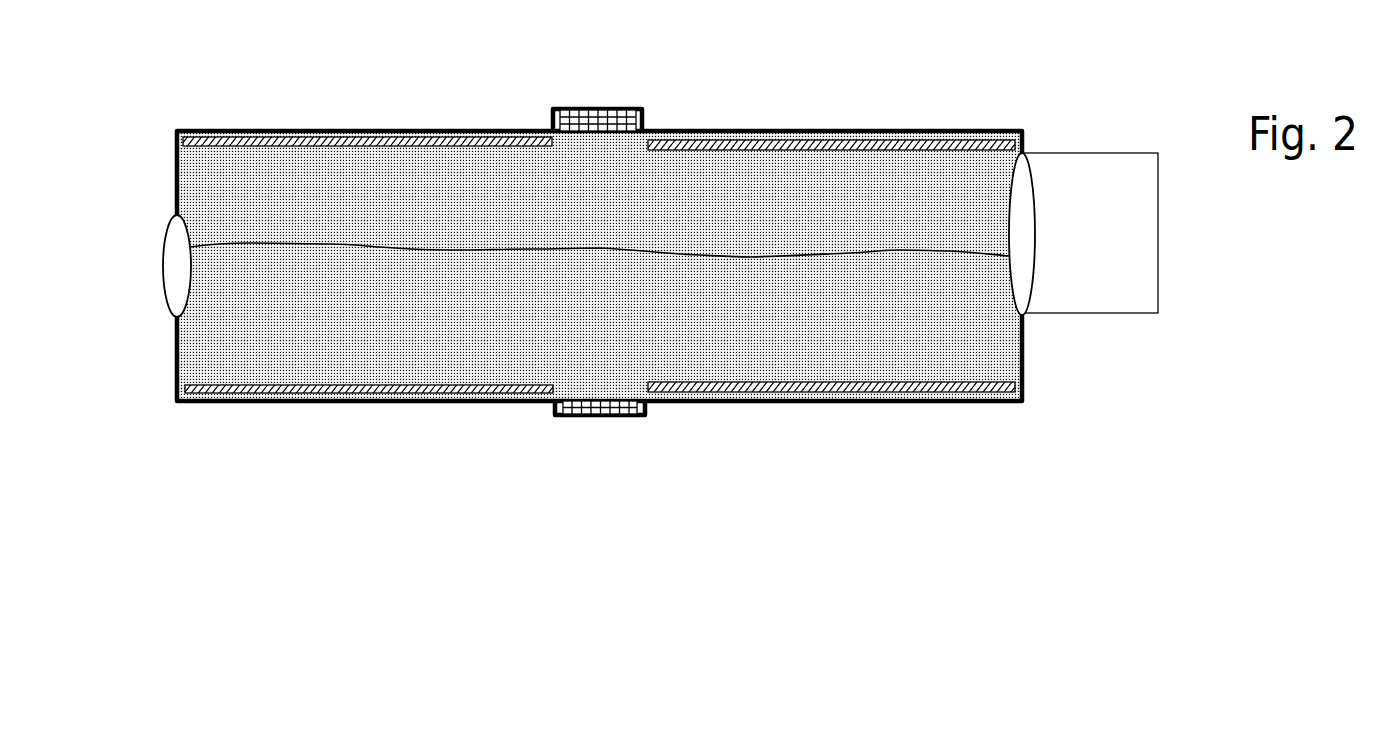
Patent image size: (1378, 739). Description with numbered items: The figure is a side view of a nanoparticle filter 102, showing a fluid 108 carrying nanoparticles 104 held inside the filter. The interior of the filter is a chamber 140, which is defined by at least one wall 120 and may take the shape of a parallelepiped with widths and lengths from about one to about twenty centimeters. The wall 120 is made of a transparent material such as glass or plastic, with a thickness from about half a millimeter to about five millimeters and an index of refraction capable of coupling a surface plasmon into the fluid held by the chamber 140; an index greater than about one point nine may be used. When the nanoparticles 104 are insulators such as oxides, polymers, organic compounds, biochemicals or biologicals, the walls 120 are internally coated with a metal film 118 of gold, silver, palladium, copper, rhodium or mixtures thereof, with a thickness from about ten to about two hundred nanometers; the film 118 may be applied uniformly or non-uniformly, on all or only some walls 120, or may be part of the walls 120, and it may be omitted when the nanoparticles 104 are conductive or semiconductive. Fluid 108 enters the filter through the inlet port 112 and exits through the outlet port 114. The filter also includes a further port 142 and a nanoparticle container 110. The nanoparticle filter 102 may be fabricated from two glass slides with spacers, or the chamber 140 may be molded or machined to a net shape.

The nanoparticle filter 102 is at (1322, 237).
The nanoparticles 104 is at (993, 355).
The fluid 108 is at (943, 253).
The nanoparticle container 110 is at (1113, 153).
The inlet port 112 is at (617, 110).
The outlet port 114 is at (577, 415).
The metal film 118 is at (452, 148).
The wall 120 is at (510, 125).
The chamber 140 is at (387, 110).
The port 142 is at (157, 278).